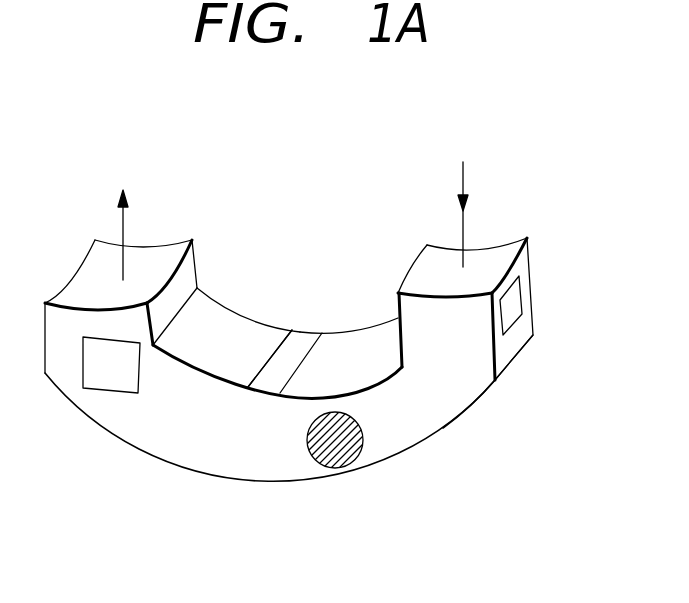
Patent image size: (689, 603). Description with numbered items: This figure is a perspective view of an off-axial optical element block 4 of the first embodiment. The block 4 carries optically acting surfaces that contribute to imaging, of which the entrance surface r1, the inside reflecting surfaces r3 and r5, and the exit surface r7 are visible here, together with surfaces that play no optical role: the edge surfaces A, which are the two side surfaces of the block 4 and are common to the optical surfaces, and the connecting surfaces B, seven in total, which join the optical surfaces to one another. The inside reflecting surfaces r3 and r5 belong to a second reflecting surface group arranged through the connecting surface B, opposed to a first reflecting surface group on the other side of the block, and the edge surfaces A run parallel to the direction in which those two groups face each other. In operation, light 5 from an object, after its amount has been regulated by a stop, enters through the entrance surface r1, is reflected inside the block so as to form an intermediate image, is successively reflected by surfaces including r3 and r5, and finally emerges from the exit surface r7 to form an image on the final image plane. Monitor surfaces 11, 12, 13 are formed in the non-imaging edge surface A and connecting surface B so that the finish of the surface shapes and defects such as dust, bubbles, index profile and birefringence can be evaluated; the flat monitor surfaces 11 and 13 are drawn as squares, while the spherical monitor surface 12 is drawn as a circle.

The off-axial optical element block 4 is at (200, 460).
The light 5 is at (465, 172).
The monitor surface 11 is at (520, 300).
The monitor surface 12 is at (345, 463).
The monitor surface 13 is at (120, 380).
The edge surface A is at (442, 428).
The connecting surface B is at (302, 337).
The entrance surface r1 is at (433, 272).
The inside reflecting surface r3 is at (358, 340).
The inside reflecting surface r5 is at (243, 327).
The exit surface r7 is at (158, 242).